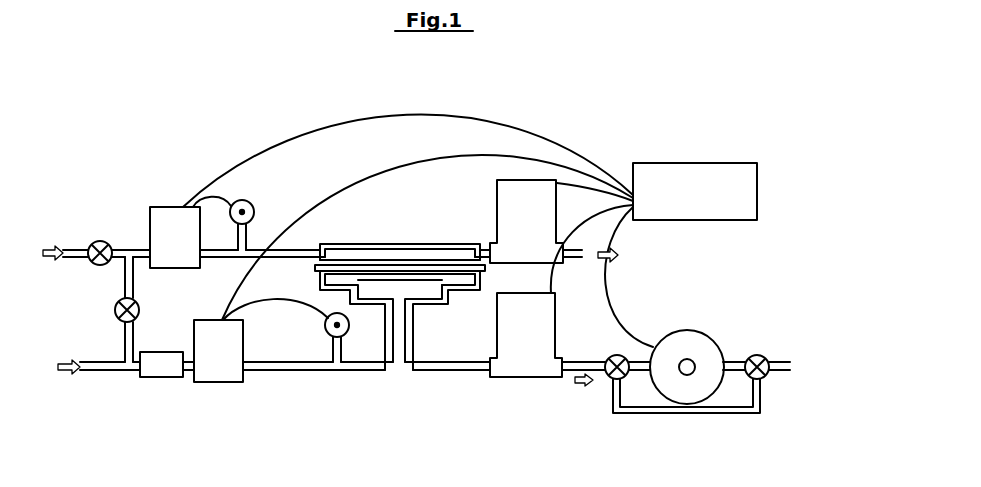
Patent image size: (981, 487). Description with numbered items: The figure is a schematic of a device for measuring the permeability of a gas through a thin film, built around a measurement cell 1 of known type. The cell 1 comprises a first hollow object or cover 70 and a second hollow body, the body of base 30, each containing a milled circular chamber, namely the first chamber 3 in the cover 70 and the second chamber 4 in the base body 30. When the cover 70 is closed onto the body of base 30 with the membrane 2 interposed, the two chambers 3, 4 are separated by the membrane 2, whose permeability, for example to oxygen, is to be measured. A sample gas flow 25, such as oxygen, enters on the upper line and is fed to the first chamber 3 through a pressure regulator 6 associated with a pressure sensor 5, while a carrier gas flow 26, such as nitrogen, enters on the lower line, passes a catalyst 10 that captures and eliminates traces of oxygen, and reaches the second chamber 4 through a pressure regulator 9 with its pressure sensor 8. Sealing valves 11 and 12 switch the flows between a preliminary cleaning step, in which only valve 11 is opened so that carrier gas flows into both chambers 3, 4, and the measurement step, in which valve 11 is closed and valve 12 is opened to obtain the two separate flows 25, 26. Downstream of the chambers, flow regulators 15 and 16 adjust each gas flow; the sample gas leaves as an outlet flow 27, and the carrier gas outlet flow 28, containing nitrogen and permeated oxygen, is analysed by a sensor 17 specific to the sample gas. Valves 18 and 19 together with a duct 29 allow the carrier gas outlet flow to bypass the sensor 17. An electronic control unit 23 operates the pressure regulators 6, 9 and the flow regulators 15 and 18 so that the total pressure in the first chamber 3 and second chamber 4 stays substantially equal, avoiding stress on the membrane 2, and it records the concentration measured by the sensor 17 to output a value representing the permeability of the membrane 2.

The measurement cell 1 is at (452, 205).
The membrane 2 is at (386, 265).
The first chamber 3 is at (332, 245).
The second chamber 4 is at (468, 275).
The pressure sensor 5 is at (240, 200).
The pressure regulator 6 is at (170, 232).
The pressure sensor 8 is at (326, 328).
The pressure regulator 9 is at (208, 373).
The catalyst 10 is at (163, 362).
The sealing valve 11 is at (140, 308).
The sealing valve 12 is at (100, 241).
The flow regulator 15 is at (533, 198).
The flow regulator 16 is at (520, 362).
The sensor 17 is at (683, 347).
The valve 18 is at (612, 358).
The valve 19 is at (757, 357).
The control unit 23 is at (690, 178).
The sample gas flow 25 is at (55, 235).
The carrier gas flow 26 is at (70, 373).
The outlet 27 is at (618, 260).
The carrier gas outlet flow 28 is at (580, 388).
The duct 29 is at (722, 408).
The body of base 30 is at (318, 272).
The cover 70 is at (413, 243).